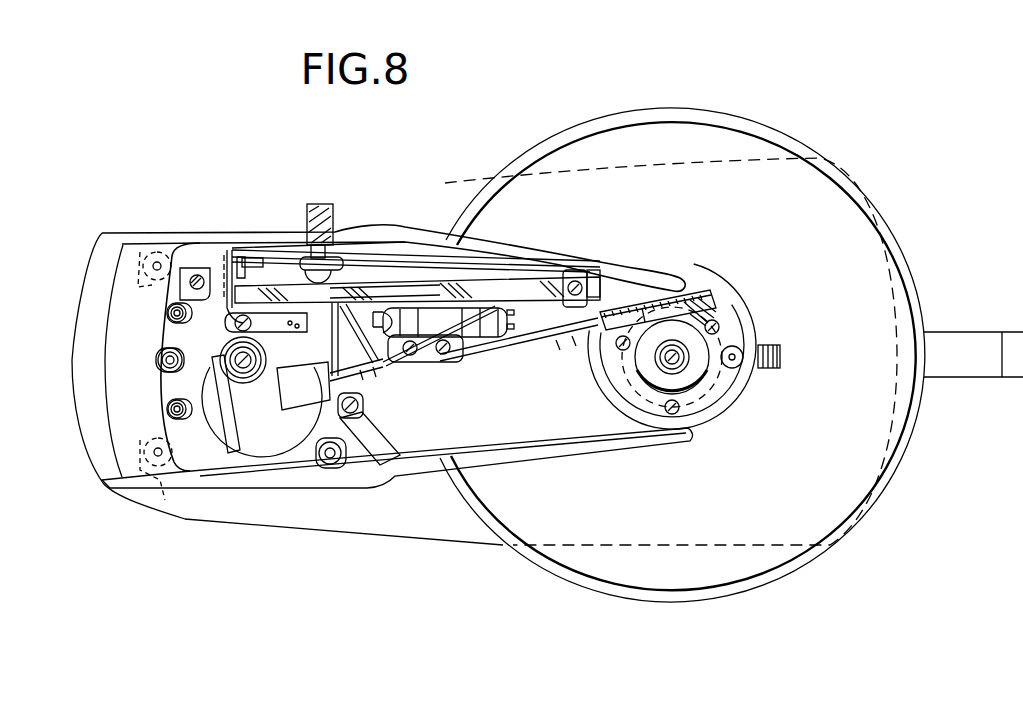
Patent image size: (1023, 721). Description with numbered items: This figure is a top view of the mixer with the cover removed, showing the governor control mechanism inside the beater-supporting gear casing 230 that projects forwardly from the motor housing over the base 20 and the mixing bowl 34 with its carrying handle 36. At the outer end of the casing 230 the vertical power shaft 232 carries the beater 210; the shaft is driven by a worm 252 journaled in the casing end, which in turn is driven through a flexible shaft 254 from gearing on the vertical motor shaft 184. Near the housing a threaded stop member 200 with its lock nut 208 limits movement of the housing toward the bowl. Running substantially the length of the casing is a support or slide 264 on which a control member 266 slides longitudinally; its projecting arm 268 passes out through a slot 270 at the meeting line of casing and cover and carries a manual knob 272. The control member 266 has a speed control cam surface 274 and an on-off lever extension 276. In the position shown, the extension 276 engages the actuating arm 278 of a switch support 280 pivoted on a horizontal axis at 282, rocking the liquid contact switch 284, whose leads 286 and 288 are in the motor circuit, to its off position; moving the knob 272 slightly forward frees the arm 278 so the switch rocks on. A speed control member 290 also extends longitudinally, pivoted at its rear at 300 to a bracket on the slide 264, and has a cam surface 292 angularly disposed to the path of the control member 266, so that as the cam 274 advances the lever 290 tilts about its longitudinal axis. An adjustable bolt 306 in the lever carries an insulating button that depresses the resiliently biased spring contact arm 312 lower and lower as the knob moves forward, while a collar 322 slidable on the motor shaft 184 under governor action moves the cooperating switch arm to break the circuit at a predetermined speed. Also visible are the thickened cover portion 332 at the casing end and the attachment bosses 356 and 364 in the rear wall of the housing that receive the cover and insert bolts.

The base 20 is at (382, 522).
The mixing bowl 34 is at (768, 128).
The carrying handle 36 is at (975, 345).
The motor shaft 184 is at (262, 368).
The stop member 200 is at (366, 414).
The lock nut 208 is at (368, 408).
The beater 210 is at (782, 352).
The gear casing 230 is at (514, 465).
The power shaft 232 is at (680, 354).
The worm 252 is at (670, 312).
The flexible shaft 254 is at (548, 342).
The support or slide 264 is at (393, 259).
The control member 266 is at (368, 253).
The projecting arm 268 is at (328, 249).
The slot 270 is at (340, 260).
The manual knob 272 is at (305, 215).
The speed control cam surface 274 is at (302, 277).
The on-off lever extension 276 is at (340, 313).
The actuating arm 278 is at (405, 362).
The switch support 280 is at (445, 352).
The pivot axis 282 is at (378, 366).
The liquid contact switch 284 is at (465, 316).
The lead 286 is at (514, 312).
The lead 288 is at (514, 327).
The speed control member 290 is at (495, 286).
The cam surface 292 is at (460, 285).
The pivot 300 is at (232, 252).
The bolt 306 is at (240, 316).
The spring contact arm 312 is at (152, 321).
The collar 322 is at (225, 325).
The thickened portion 332 is at (760, 388).
The attachment bosses 356 is at (172, 309).
The attachment boss 364 is at (162, 358).